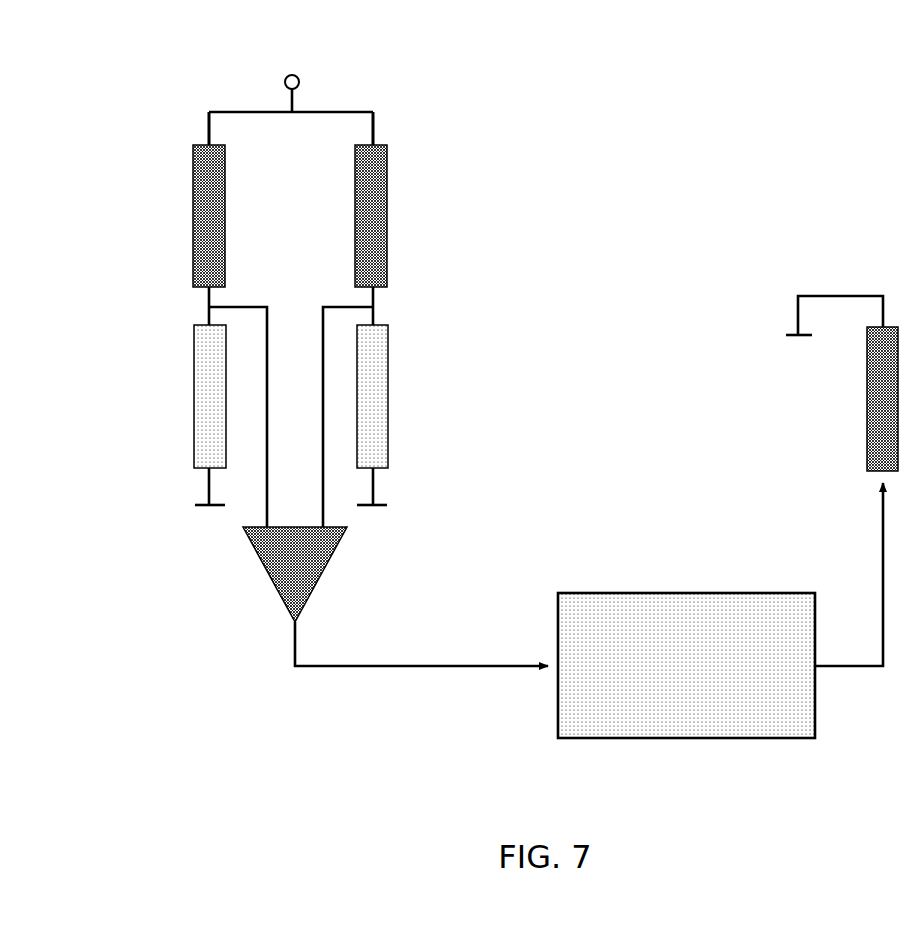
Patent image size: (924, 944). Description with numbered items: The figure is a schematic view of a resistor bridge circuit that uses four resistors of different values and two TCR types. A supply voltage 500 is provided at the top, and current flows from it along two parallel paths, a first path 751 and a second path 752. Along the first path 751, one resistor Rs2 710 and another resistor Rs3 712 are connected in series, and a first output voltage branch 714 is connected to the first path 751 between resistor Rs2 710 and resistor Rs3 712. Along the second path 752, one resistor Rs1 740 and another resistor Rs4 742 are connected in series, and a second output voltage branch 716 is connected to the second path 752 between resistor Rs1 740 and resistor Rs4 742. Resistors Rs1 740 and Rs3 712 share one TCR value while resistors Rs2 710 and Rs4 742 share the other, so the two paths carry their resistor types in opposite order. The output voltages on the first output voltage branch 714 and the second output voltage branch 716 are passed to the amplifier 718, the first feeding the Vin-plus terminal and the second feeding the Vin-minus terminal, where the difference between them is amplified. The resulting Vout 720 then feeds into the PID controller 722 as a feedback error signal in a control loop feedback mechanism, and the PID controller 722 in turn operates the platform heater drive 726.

The supply voltage 500 is at (300, 79).
The first path 751 is at (208, 128).
The second path 752 is at (374, 128).
The resistor Rs2 710 is at (193, 197).
The resistor Rs1 740 is at (387, 197).
The first output voltage branch 714 is at (242, 305).
The second output voltage branch 716 is at (347, 305).
The resistor Rs3 712 is at (195, 398).
The resistor Rs4 742 is at (388, 400).
The amplifier 718 is at (323, 572).
The output voltage Vout 720 is at (293, 643).
The PID controller 722 is at (680, 592).
The platform heater drive 726 is at (867, 383).